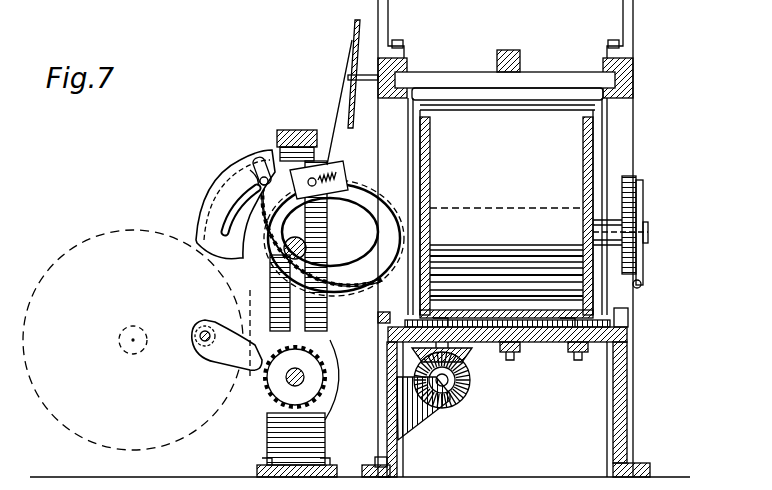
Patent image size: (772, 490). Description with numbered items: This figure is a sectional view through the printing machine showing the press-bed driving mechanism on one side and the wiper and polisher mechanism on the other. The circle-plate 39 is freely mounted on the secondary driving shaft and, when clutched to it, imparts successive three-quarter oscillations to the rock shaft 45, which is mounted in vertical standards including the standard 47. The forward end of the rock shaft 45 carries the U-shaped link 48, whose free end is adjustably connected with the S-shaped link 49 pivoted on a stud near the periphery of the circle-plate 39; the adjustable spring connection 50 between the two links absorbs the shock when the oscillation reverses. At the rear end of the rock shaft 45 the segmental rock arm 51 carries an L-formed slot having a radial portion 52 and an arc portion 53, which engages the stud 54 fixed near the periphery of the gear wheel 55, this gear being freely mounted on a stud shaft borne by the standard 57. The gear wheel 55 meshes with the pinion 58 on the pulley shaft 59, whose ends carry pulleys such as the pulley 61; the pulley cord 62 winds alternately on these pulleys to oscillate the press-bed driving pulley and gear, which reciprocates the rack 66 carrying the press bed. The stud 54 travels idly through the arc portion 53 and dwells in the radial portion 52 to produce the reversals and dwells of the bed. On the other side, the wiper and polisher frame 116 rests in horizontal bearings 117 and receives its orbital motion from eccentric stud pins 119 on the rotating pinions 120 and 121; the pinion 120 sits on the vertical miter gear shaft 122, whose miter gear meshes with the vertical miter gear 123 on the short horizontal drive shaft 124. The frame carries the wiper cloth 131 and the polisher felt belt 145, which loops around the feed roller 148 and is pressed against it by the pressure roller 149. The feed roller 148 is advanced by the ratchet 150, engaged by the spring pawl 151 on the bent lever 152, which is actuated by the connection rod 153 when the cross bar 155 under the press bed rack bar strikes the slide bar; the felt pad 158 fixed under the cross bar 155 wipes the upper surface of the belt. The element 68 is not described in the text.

The circle-plate 39 is at (94, 232).
The rock shaft 45 is at (232, 290).
The vertical standard 47 is at (279, 143).
The U-shaped link 48 is at (372, 204).
The S-shaped link 49 is at (340, 170).
The adjustable spring connection 50 is at (341, 165).
The segmental rock arm 51 is at (218, 185).
The radial portion of slot 52 is at (260, 176).
The arc portion of slot 53 is at (225, 229).
The stud 54 is at (256, 182).
The gear wheel 55 is at (350, 328).
The vertical standard 57 is at (324, 160).
The pinion 58 is at (272, 379).
The pulley shaft 59 is at (288, 384).
The pulley 61 is at (333, 405).
The pulley cord 62 is at (355, 30).
The rack 66 is at (522, 62).
The frame 68 is at (635, 73).
The wiper and polisher frame 116 is at (431, 171).
The horizontal bearings 117 is at (640, 329).
The stud pins 119 is at (446, 314).
The pinion 120 is at (470, 345).
The pinion 121 is at (556, 348).
The miter gear shaft 122 is at (466, 383).
The vertical miter gear 123 is at (460, 390).
The horizontal drive shaft 124 is at (443, 412).
The wiper cloth 131 is at (538, 300).
The polisher felt belt 145 is at (506, 212).
The feed roller 148 is at (500, 207).
The pressure roller 149 is at (506, 272).
The ratchet 150 is at (636, 255).
The spring pawl 151 is at (637, 176).
The bent lever 152 is at (645, 205).
The connection rod 153 is at (643, 285).
The cross bar 155 is at (505, 78).
The felt pad 158 is at (548, 90).